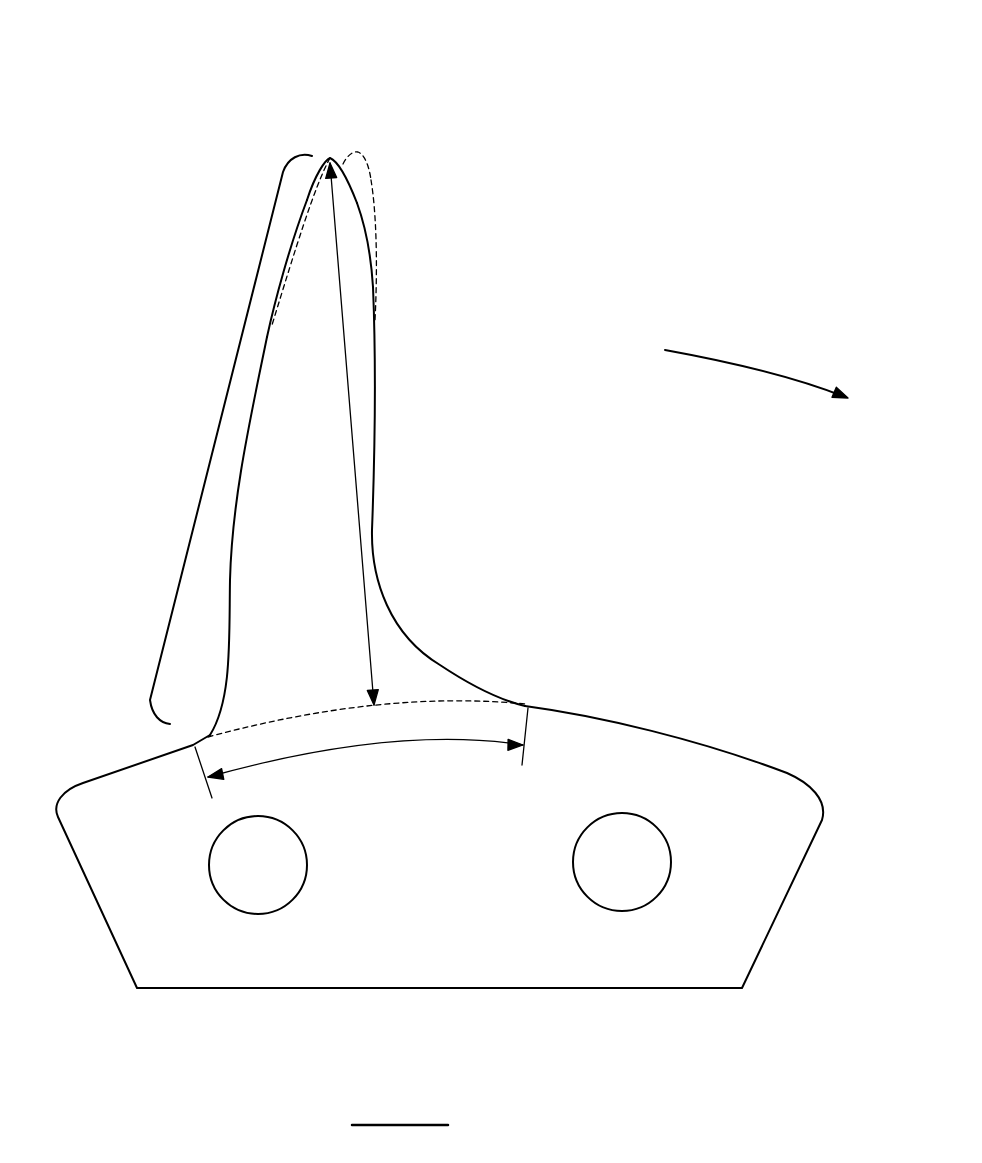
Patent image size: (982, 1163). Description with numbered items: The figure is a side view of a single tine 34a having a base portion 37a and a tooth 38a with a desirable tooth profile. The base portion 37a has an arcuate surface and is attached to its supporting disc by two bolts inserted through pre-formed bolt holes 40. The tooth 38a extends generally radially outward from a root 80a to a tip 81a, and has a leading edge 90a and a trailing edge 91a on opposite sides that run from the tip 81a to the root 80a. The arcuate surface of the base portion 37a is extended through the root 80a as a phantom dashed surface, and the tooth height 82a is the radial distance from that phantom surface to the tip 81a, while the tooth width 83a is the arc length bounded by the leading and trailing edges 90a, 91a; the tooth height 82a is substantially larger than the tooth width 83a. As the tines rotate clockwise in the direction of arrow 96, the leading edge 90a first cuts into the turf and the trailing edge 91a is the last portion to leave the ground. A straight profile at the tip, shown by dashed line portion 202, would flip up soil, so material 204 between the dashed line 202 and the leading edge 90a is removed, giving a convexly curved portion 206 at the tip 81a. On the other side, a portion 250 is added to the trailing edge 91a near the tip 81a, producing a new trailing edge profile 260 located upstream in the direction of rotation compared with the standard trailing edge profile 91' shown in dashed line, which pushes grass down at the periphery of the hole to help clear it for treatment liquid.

The tine 34a is at (122, 160).
The tooth 38a is at (518, 172).
The root 80a is at (512, 630).
The tip 81a is at (405, 108).
The added portion 250 is at (305, 212).
The trailing edge 91a is at (230, 555).
The convexly curved portion 206 is at (363, 220).
The leading edge 90a is at (372, 470).
The removed material 204 is at (363, 171).
The dashed line portion 202 is at (373, 200).
The standard tooth trailing edge profile 91' is at (275, 206).
The new trailing edge profile 260 is at (231, 398).
The tooth height 82a is at (372, 608).
The tooth width 83a is at (383, 745).
The base portion 37a is at (743, 772).
The bolt holes 40 is at (297, 895).
The arrow indicating direction of rotation 96 is at (763, 372).